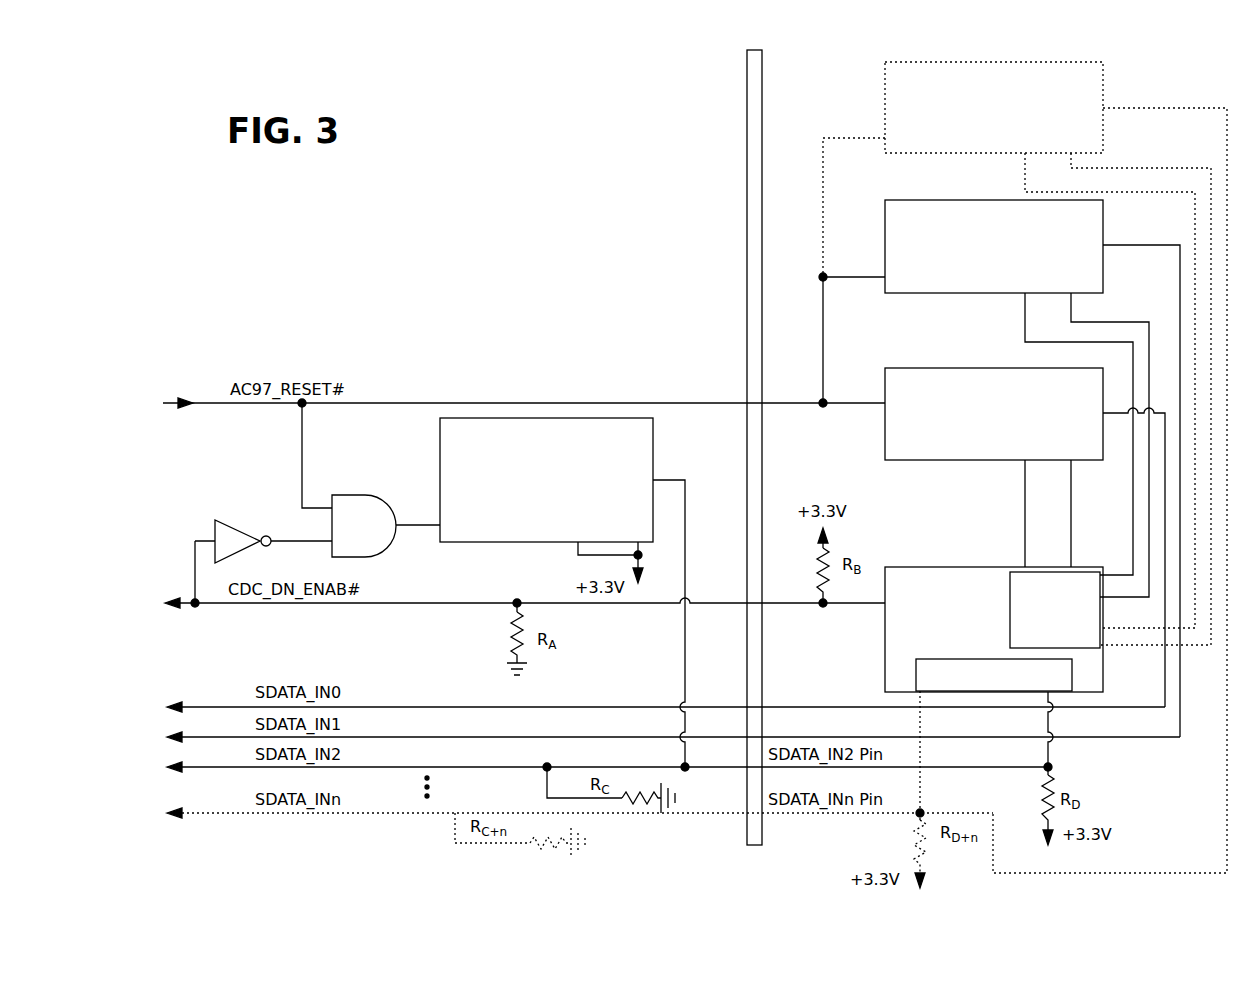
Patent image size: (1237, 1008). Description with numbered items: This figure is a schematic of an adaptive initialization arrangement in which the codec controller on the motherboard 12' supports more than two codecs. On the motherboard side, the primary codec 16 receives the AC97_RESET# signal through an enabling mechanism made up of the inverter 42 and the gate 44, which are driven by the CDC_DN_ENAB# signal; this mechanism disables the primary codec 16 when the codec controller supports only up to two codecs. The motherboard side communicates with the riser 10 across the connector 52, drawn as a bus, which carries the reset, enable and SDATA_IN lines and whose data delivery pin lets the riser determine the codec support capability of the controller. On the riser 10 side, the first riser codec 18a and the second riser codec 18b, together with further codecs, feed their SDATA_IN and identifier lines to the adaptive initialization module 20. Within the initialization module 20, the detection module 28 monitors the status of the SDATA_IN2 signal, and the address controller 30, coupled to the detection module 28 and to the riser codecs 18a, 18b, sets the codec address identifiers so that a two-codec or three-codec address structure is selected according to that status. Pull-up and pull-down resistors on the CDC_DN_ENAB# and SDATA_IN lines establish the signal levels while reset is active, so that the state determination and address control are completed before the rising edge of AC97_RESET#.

The riser 10 is at (1020, 46).
The motherboard 12' is at (671, 515).
The primary codec 16 is at (653, 425).
The first riser codec 18a is at (992, 368).
The second riser codec 18b is at (985, 200).
The adaptive initialization module 20 is at (972, 567).
The detection module 28 is at (916, 676).
The address controller 30 is at (1017, 567).
The inverter 42 is at (233, 520).
The gate 44 is at (370, 495).
The connector 52 is at (747, 232).